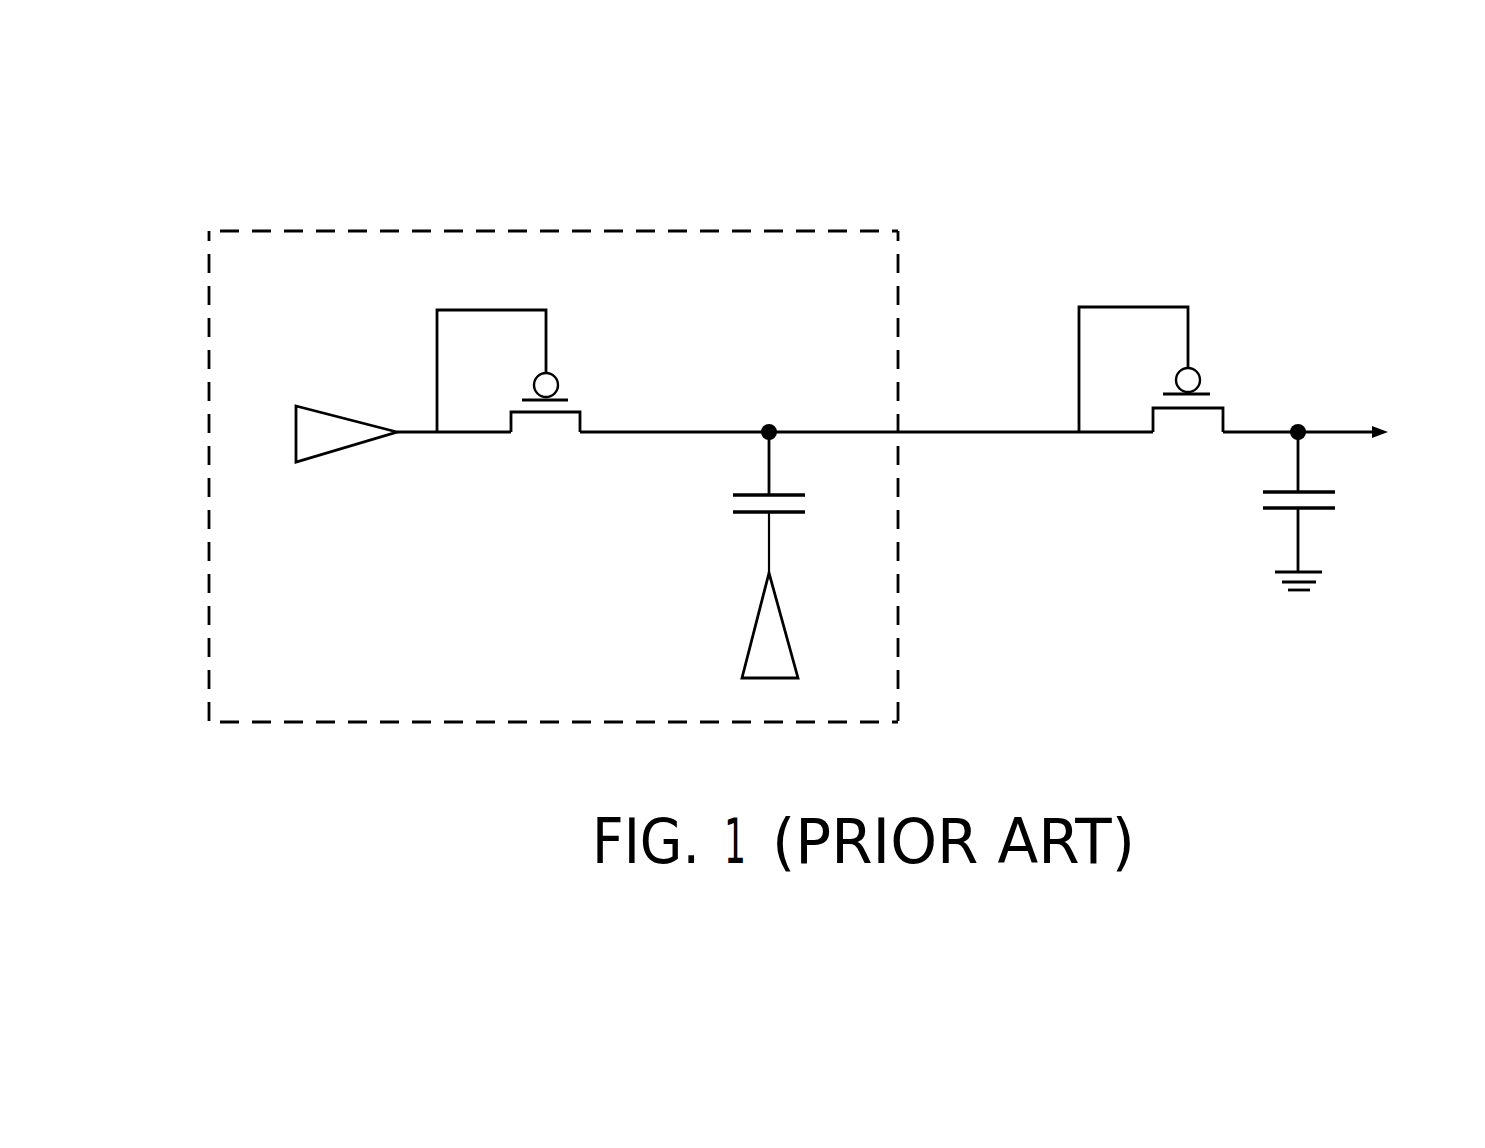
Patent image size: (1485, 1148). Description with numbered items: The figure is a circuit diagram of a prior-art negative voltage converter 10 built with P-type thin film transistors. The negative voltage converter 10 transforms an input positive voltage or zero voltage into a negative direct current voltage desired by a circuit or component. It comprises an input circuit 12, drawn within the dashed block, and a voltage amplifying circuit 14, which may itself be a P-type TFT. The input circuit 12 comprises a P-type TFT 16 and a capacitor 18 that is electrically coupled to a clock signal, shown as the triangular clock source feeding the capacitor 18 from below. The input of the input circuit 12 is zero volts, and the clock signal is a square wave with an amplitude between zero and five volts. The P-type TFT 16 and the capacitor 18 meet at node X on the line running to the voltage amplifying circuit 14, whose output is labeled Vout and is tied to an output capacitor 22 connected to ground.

The negative voltage converter 10 is at (879, 139).
The input circuit 12 is at (578, 231).
The voltage amplifying circuit 14 is at (1205, 395).
The P-type TFT 16 is at (563, 399).
The capacitor 18 is at (733, 495).
The output hold capacitor 22 is at (1313, 510).